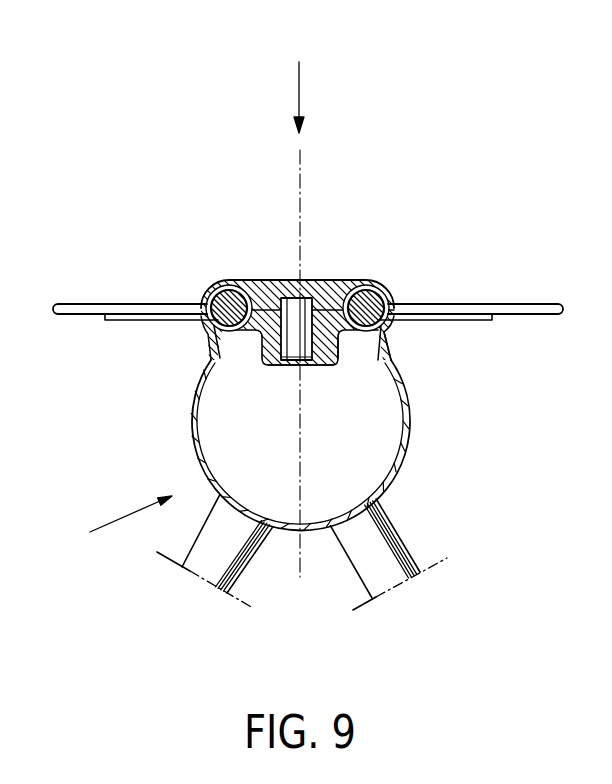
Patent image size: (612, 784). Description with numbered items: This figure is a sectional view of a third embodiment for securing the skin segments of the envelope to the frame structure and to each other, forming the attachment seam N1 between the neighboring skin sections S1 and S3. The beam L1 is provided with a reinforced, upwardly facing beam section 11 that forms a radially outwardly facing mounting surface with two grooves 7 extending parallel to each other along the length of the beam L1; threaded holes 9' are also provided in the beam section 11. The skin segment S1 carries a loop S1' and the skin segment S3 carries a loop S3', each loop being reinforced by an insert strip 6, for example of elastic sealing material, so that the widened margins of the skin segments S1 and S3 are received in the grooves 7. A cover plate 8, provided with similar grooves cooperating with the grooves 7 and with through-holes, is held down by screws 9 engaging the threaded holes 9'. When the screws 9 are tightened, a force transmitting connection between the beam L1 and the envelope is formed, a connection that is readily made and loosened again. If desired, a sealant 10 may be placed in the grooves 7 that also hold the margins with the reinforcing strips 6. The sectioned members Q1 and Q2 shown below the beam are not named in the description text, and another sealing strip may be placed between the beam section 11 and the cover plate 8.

The insert strip 6 is at (216, 281).
The grooves 7 is at (205, 335).
The cover plate 8 is at (333, 279).
The screws 9 is at (278, 276).
The threaded holes 9' is at (280, 388).
The sealant 10 is at (395, 326).
The beam section 11 is at (335, 358).
The skin segment S3 is at (119, 263).
The loop S3' is at (129, 341).
The skin segment S1 is at (488, 281).
The loop S1' is at (460, 346).
The strut Q1 is at (210, 555).
The strut Q2 is at (370, 572).
The beam L1 is at (114, 526).
The attachment seam N1 is at (315, 85).